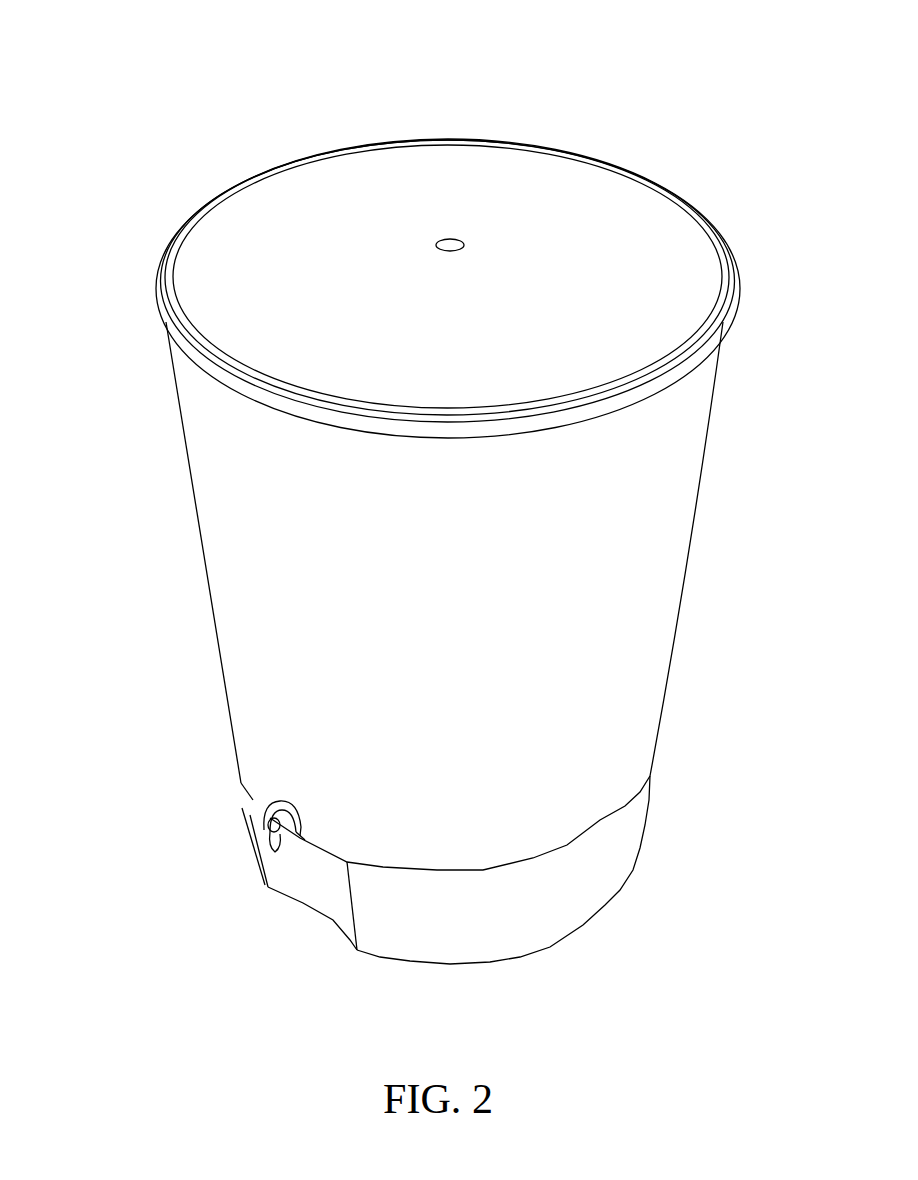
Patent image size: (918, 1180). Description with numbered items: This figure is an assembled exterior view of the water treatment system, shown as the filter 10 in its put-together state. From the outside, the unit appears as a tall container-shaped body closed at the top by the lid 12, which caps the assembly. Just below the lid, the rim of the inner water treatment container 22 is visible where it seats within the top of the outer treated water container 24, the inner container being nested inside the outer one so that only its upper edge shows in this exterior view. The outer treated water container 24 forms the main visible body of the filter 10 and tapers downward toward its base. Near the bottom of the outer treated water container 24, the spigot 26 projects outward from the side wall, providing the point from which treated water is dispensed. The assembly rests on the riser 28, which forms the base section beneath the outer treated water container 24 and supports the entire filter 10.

The filter 10 is at (150, 164).
The lid 12 is at (553, 195).
The inner water treatment container 22 is at (202, 368).
The outer treated water container 24 is at (662, 566).
The spigot 26 is at (243, 810).
The riser 28 is at (618, 873).